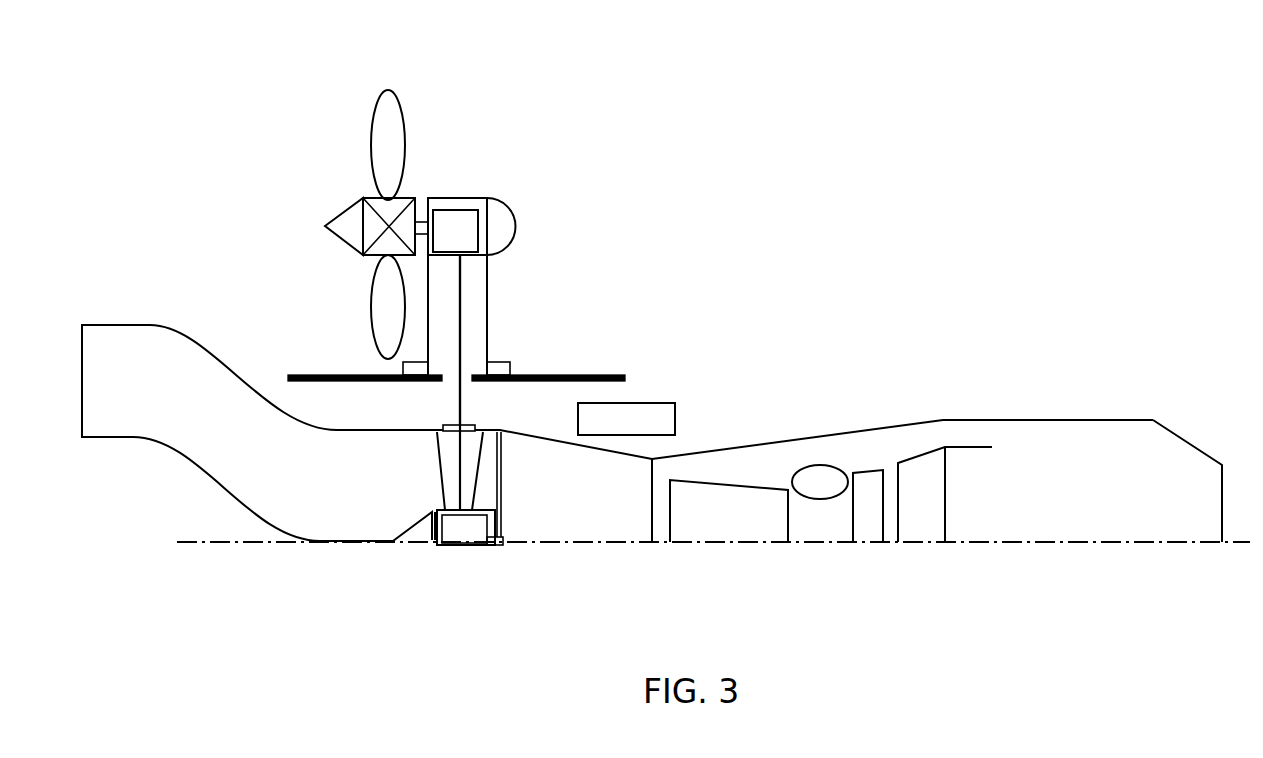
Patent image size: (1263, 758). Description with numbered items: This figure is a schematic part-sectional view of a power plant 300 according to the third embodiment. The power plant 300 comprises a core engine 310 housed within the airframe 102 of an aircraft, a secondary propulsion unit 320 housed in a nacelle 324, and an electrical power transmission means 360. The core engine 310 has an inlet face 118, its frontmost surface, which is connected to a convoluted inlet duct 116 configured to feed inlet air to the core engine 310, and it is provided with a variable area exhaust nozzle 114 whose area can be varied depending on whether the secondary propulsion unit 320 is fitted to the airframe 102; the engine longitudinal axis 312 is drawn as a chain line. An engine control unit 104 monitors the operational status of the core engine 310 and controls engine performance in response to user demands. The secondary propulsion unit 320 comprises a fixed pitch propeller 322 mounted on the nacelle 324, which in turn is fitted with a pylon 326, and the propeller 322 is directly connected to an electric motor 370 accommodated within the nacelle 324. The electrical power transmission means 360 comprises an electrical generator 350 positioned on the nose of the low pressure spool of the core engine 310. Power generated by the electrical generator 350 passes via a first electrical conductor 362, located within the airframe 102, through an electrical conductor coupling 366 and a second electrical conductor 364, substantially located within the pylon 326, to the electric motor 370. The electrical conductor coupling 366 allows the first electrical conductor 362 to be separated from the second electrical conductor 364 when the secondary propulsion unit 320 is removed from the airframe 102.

The power plant 300 is at (787, 101).
The airframe 102 is at (602, 374).
The engine control unit 104 is at (637, 398).
The variable area exhaust nozzle 114 is at (1197, 447).
The convoluted inlet duct 116 is at (122, 325).
The inlet face 118 is at (487, 480).
The core engine 310 is at (785, 438).
The engine centerline axis 312 is at (543, 527).
The secondary propulsion unit 320 is at (477, 197).
The propeller 322 is at (340, 196).
The nacelle 324 is at (447, 197).
The pylon 326 is at (487, 303).
The electrical generator 350 is at (433, 517).
The electrical power transmission means 360 is at (463, 405).
The first electrical conductor 362 is at (458, 452).
The second electrical conductor 364 is at (462, 390).
The electrical conductor coupling 366 is at (443, 425).
The electric motor 370 is at (480, 227).